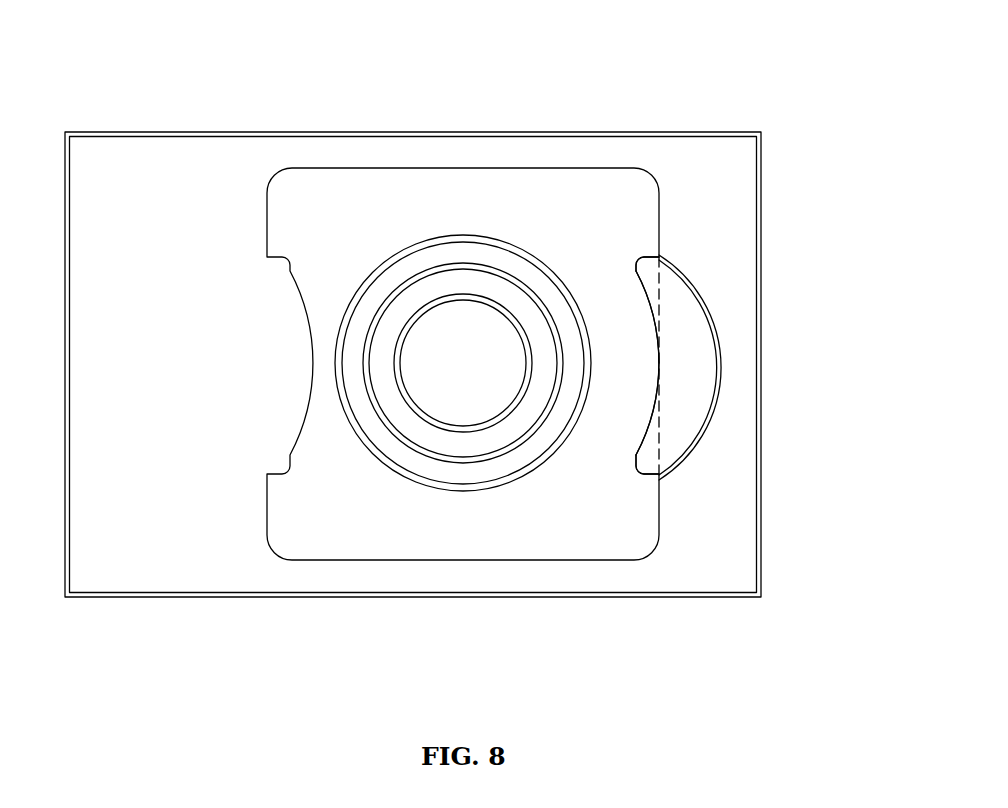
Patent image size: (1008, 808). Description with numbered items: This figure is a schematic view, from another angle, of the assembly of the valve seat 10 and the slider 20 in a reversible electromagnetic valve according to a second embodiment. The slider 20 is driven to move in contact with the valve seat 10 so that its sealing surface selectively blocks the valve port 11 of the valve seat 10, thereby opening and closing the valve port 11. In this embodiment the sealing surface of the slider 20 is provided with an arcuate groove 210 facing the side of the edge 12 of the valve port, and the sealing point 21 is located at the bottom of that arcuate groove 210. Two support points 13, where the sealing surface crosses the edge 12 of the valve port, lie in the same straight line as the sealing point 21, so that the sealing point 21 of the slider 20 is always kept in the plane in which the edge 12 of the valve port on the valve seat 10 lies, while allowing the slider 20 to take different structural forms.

The valve seat 10 is at (413, 418).
The slider 20 is at (463, 439).
The support points 13 is at (666, 372).
The arcuate groove 210 is at (751, 311).
The edge of the valve port 12 is at (754, 362).
The sealing point 21 is at (758, 367).
The valve port 11 is at (747, 419).